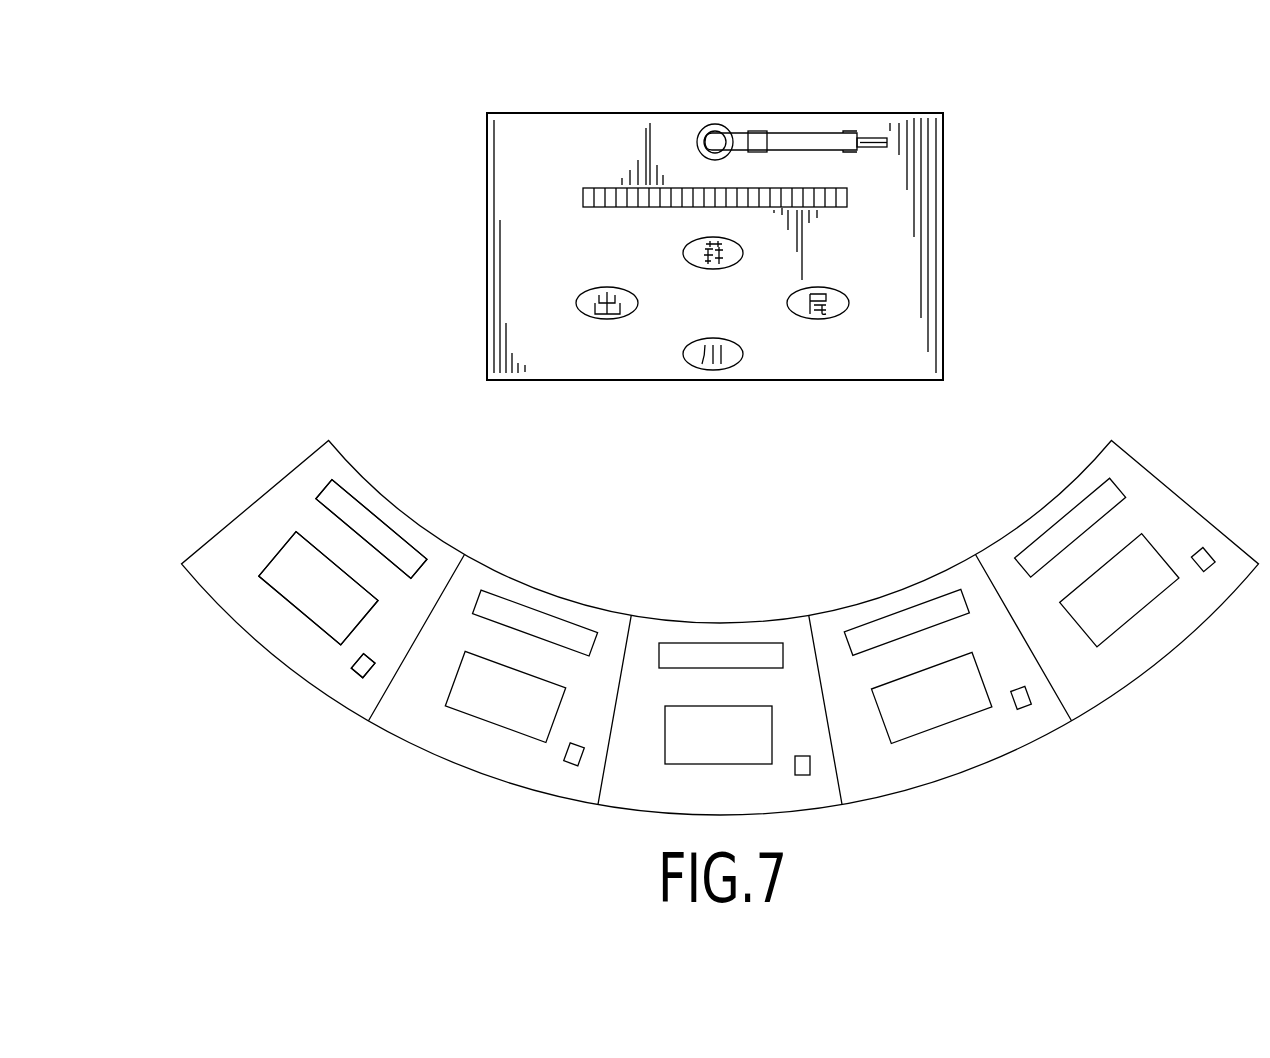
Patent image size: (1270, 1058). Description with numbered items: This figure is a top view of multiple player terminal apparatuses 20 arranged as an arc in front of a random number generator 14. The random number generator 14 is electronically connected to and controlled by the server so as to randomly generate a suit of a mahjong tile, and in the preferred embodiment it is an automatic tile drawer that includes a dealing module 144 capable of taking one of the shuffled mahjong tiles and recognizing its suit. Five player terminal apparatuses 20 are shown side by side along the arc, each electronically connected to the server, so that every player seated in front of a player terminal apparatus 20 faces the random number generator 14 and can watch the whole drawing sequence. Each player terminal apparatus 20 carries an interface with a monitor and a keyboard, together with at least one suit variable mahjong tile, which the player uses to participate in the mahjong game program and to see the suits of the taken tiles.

The random number generator 14 is at (686, 210).
The dealing module 144 is at (782, 112).
The player terminal apparatus 20 is at (720, 600).